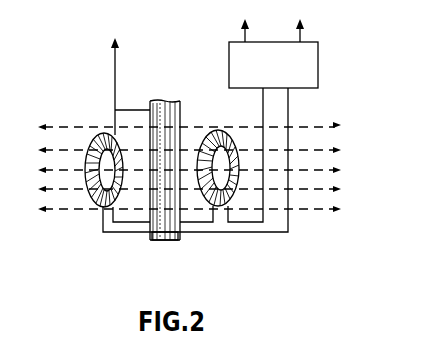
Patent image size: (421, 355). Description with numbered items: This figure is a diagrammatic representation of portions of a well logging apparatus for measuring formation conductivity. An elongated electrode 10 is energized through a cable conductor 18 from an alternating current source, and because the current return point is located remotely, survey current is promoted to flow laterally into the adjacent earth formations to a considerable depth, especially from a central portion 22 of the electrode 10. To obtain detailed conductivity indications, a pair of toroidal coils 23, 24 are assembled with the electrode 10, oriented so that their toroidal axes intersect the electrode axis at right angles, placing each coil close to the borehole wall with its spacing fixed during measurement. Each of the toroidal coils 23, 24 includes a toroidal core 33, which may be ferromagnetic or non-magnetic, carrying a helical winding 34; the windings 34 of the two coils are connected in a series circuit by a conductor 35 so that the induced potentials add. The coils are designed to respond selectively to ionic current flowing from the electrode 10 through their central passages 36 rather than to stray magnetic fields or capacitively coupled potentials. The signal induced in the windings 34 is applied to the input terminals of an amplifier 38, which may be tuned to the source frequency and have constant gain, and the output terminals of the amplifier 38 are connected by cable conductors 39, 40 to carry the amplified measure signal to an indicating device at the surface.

The electrode 10 is at (176, 113).
The cable conductor 18 is at (116, 84).
The central portion of the electrode 22 is at (163, 238).
The toroidal coil 23 is at (97, 205).
The toroidal coil 24 is at (227, 135).
The toroidal core 33 is at (95, 136).
The helical winding 34 is at (86, 160).
The conductor 35 is at (213, 232).
The central passage 36 is at (96, 196).
The amplifier 38 is at (320, 48).
The cable conductor 39 is at (241, 33).
The cable conductor 40 is at (303, 34).